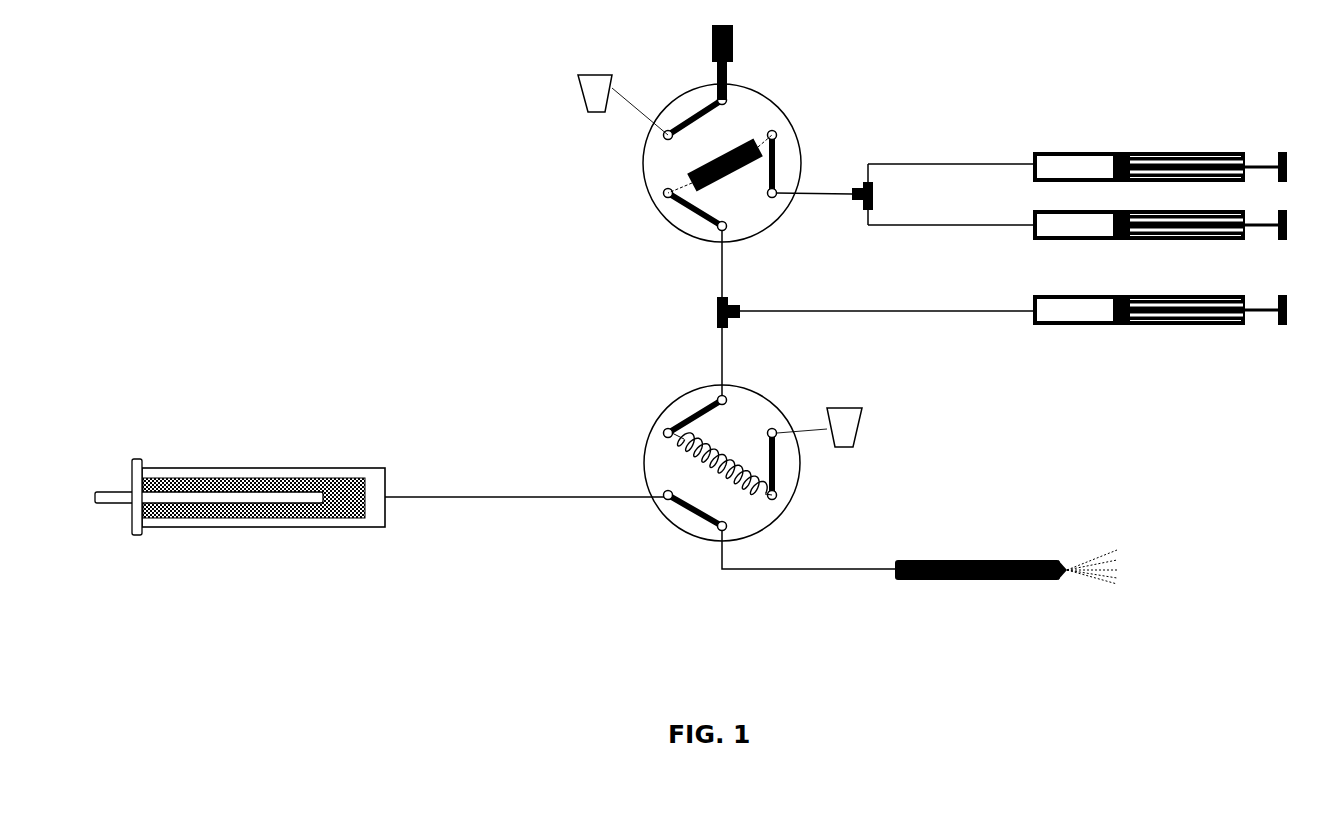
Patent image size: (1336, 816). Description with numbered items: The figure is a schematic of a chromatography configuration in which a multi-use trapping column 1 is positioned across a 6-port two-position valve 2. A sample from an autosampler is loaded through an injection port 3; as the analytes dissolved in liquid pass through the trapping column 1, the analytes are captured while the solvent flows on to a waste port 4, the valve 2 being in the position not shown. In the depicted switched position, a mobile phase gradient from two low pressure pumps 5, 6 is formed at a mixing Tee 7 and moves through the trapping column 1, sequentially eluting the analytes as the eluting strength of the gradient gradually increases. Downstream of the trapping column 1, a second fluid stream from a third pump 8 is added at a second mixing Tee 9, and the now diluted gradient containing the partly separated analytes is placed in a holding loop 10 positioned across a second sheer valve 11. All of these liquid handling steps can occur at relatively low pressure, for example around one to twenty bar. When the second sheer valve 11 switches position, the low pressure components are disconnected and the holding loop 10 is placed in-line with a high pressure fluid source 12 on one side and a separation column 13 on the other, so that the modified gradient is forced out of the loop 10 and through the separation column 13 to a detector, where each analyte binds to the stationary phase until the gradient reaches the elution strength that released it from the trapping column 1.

The multi-use trapping column 1 is at (677, 175).
The 6-port two-position valve 2 is at (722, 163).
The injection port 3 is at (738, 62).
The waste port 4 is at (612, 105).
The low pressure pump 5 is at (1171, 167).
The low pressure pump 6 is at (1171, 225).
The mixing Tee 7 is at (905, 188).
The third pump 8 is at (1171, 310).
The second mixing Tee 9 is at (876, 313).
The holding loop 10 is at (672, 452).
The second sheer valve 11 is at (640, 477).
The high pressure fluid source 12 is at (240, 488).
The separation column 13 is at (1006, 558).